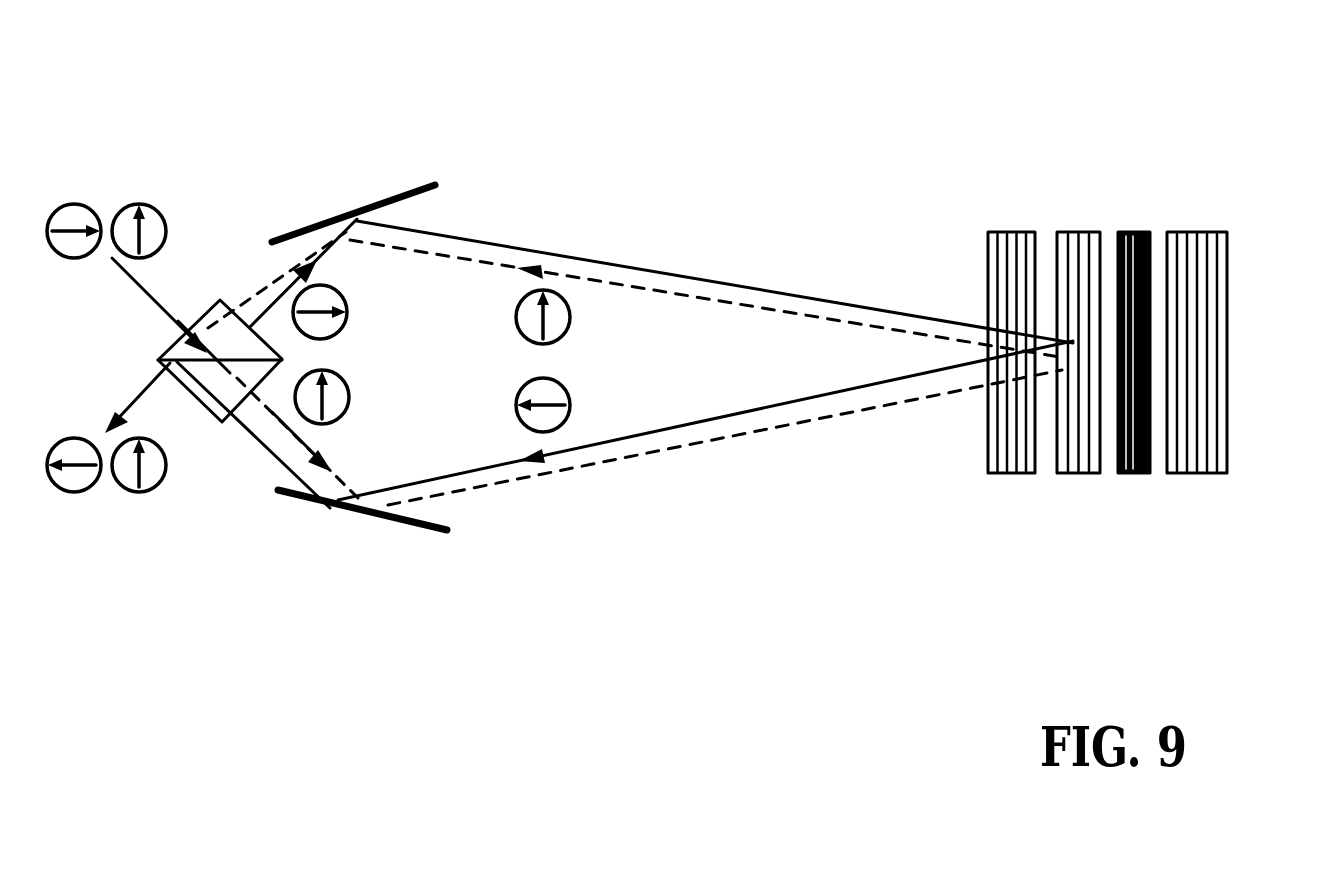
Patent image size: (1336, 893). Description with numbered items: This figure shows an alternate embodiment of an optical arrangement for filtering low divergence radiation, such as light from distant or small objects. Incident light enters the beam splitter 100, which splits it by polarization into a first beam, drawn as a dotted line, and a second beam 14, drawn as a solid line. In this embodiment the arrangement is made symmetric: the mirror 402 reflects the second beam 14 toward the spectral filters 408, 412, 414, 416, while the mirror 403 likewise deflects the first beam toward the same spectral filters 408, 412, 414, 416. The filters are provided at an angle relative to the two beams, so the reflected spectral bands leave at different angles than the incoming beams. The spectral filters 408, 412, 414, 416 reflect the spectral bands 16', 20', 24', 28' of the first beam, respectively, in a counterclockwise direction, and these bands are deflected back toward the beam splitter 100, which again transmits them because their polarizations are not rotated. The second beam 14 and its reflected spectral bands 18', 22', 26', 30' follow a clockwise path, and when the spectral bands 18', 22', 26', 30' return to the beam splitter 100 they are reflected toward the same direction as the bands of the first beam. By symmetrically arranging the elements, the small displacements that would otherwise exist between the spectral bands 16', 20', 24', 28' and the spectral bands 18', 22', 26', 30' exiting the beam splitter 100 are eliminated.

The beam splitter 100 is at (213, 297).
The mirror 402 is at (352, 217).
The mirror 403 is at (360, 515).
The second beam 14 is at (715, 264).
The spectral band 16' is at (708, 179).
The spectral band 20' is at (708, 179).
The spectral band 24' is at (708, 179).
The spectral band 28' is at (708, 179).
The spectral band 18' is at (705, 502).
The spectral band 22' is at (705, 502).
The spectral band 26' is at (705, 502).
The spectral band 30' is at (705, 502).
The spectral filter 408 is at (1010, 232).
The spectral filter 412 is at (1077, 232).
The spectral filter 414 is at (1130, 232).
The spectral filter 416 is at (1200, 232).